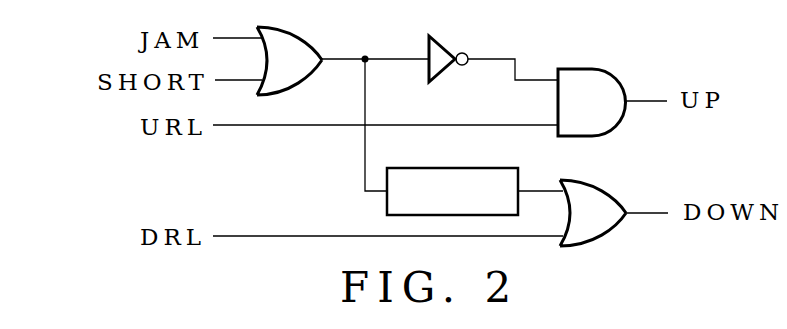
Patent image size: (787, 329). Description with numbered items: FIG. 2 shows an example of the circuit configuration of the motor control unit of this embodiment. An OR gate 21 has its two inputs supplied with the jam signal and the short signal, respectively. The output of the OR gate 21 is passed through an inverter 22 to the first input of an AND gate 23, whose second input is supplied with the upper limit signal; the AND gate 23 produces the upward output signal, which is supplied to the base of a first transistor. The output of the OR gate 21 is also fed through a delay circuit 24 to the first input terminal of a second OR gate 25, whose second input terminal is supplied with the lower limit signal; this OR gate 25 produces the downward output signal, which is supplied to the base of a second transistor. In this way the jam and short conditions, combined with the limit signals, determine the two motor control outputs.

The OR gate 21 is at (275, 27).
The inverter 22 is at (442, 41).
The AND gate 23 is at (593, 67).
The delay circuit 24 is at (462, 167).
The OR gate 25 is at (577, 181).